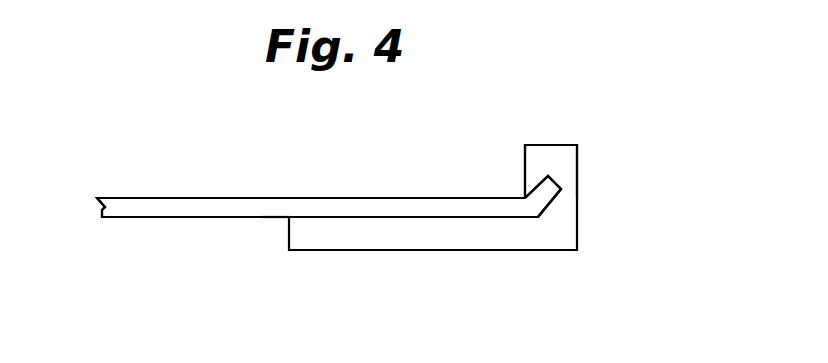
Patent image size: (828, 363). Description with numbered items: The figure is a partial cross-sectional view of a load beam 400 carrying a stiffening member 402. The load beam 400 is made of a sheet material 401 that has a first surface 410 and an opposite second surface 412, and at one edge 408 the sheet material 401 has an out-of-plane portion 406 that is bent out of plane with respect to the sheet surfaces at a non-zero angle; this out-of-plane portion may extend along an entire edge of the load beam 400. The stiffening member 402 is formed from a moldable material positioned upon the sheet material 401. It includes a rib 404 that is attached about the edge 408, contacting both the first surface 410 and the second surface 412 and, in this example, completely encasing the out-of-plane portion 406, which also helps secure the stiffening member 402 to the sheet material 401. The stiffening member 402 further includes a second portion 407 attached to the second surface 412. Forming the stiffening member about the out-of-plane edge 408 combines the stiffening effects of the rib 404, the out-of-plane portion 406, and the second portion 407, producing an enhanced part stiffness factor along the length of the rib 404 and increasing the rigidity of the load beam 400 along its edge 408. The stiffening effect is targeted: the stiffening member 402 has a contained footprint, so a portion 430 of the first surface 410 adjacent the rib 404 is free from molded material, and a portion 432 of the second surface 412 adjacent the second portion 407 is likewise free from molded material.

The load beam 400 is at (258, 114).
The sheet material 401 is at (158, 207).
The stiffening member 402 is at (577, 252).
The rib 404 is at (548, 152).
The out-of-plane portion 406 is at (541, 202).
The second portion 407 is at (420, 250).
The edge 408 is at (553, 192).
The first surface 410 is at (381, 197).
The second surface 412 is at (242, 217).
The portion of the first surface 430 is at (503, 198).
The portion of the second surface 432 is at (275, 219).